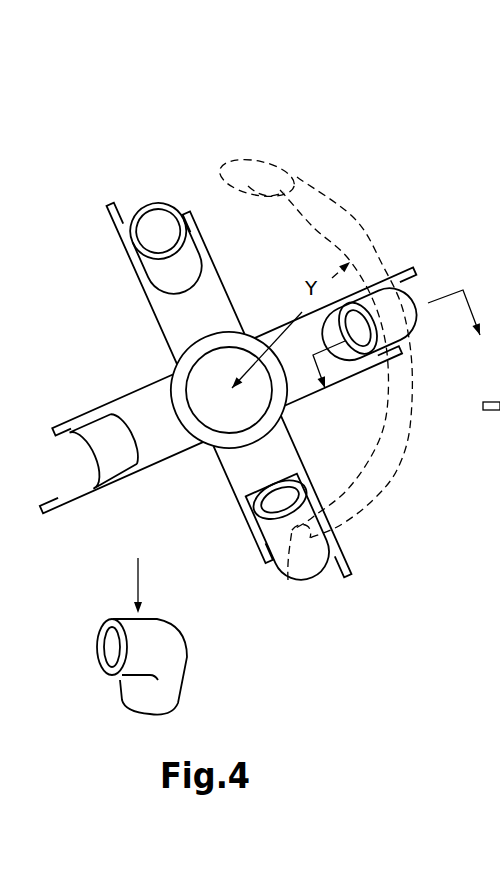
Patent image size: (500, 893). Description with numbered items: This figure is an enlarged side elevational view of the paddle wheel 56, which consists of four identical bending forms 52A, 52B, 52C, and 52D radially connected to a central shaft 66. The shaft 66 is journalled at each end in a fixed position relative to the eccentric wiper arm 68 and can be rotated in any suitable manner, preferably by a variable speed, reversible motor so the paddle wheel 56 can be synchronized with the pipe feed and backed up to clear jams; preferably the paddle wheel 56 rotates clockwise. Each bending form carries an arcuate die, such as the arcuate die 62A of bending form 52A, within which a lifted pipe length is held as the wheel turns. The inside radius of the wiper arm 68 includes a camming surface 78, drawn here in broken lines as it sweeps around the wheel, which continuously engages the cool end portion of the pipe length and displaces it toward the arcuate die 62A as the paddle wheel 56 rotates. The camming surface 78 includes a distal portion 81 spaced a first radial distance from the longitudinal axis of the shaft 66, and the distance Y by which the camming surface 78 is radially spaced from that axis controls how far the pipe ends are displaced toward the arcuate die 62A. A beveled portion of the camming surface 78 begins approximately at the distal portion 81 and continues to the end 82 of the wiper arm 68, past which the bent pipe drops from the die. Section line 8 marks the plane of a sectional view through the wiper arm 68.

The section line 8 is at (406, 362).
The bending form 52A is at (160, 327).
The bending form 52B is at (265, 328).
The bending form 52C is at (302, 455).
The bending form 52D is at (170, 462).
The paddle wheel 56 is at (211, 448).
The arcuate die 62A is at (166, 276).
The shaft 66 is at (218, 388).
The eccentric wiper arm 68 is at (235, 163).
The camming surface 78 is at (300, 207).
The distal portion 81 is at (297, 177).
The end of wiper arm 82 is at (288, 580).